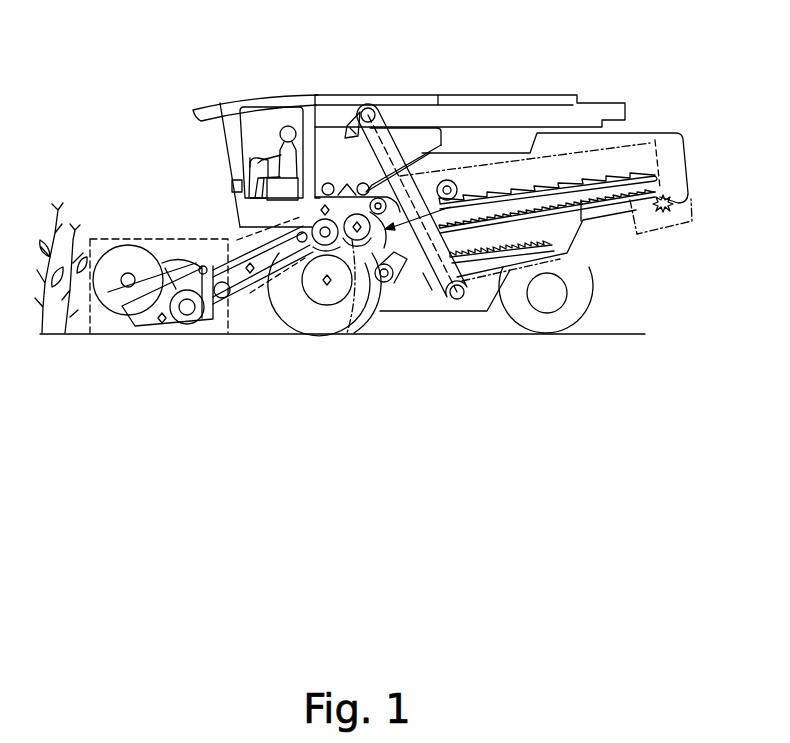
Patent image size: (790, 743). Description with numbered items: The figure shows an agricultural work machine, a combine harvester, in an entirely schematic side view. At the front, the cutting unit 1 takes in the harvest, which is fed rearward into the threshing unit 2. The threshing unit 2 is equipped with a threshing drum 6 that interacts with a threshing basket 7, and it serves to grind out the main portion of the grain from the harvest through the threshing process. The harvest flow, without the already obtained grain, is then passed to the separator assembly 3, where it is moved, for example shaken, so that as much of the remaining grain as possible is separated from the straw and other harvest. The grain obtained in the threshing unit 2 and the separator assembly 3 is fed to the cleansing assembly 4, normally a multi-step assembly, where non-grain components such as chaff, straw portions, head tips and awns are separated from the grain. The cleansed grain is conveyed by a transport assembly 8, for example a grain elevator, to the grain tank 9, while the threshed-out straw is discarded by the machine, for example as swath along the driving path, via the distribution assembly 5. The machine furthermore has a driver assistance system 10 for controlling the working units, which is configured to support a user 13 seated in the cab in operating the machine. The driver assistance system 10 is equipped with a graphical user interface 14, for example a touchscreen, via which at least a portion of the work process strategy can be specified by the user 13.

The cutting unit 1 is at (122, 238).
The threshing unit 2 is at (356, 242).
The separator assembly 3 is at (557, 152).
The cleansing assembly 4 is at (585, 232).
The distribution assembly 5 is at (650, 232).
The threshing drum 6 is at (403, 212).
The threshing basket 7 is at (385, 282).
The transport assembly 8 is at (408, 190).
The grain tank 9 is at (342, 120).
The driver assistance system 10 is at (215, 160).
The user 13 is at (287, 126).
The graphical user interface 14 is at (243, 160).